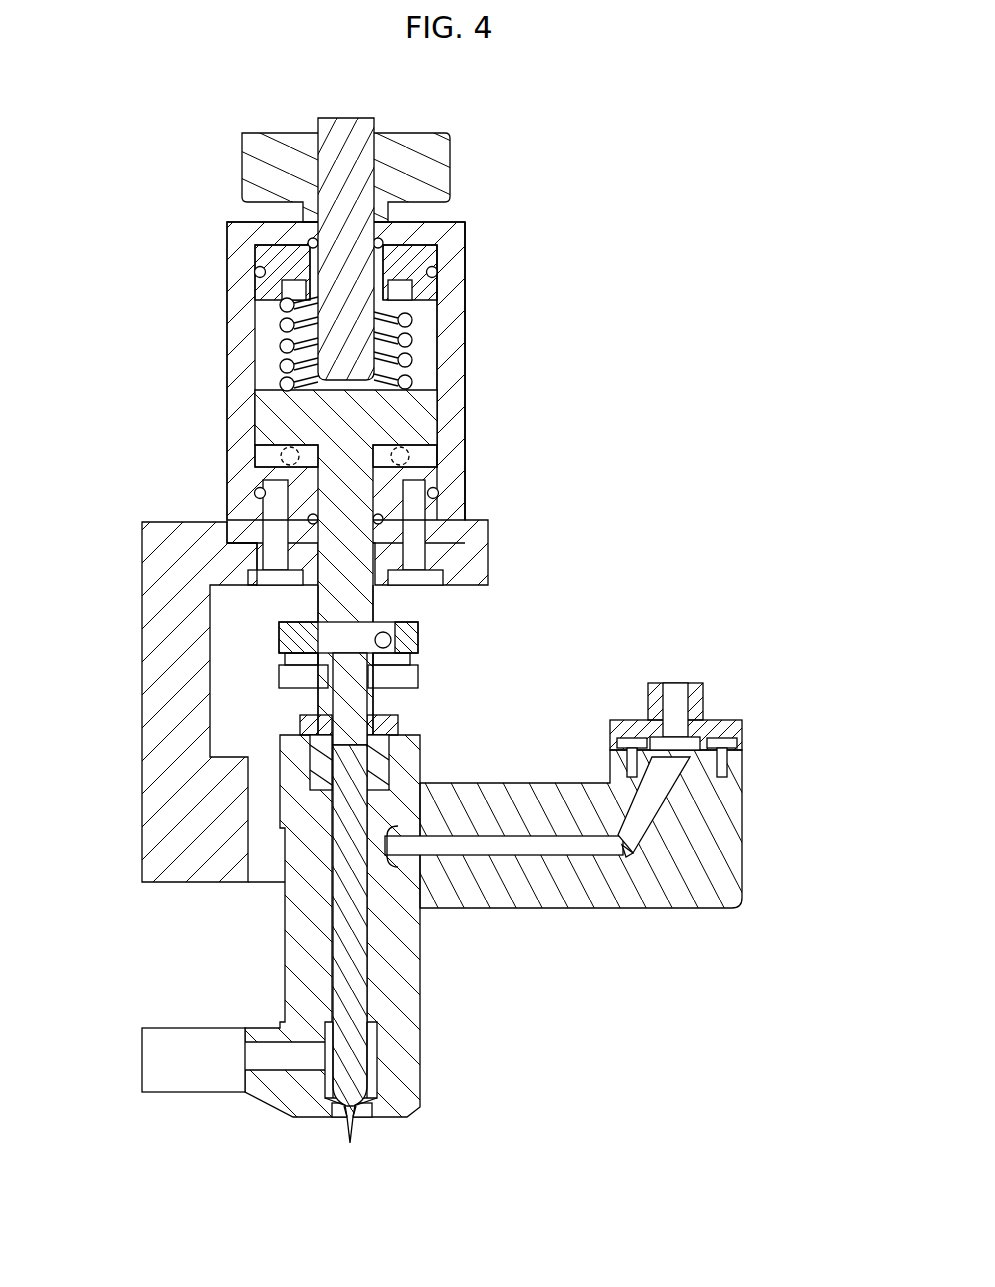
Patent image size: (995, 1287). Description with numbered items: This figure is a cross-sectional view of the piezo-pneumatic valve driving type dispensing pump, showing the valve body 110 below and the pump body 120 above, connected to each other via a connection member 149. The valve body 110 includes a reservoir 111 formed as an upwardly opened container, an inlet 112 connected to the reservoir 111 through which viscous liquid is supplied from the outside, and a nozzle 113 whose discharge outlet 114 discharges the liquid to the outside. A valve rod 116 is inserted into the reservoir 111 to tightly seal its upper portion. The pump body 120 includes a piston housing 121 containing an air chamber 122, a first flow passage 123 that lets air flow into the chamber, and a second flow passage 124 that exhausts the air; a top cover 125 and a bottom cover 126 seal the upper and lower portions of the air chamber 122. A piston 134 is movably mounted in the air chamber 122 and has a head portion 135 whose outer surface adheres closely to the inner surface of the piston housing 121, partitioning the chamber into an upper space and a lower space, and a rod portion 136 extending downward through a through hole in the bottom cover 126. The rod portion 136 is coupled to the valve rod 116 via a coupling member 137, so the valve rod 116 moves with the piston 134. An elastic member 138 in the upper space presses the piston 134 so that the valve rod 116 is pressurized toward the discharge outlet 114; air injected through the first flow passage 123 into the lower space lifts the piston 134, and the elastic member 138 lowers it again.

The valve body 110 is at (760, 832).
The reservoir 111 is at (365, 955).
The inlet 112 is at (673, 693).
The nozzle 113 is at (340, 1122).
The discharge outlet 114 is at (350, 1147).
The valve rod 116 is at (362, 697).
The pump body 120 is at (530, 352).
The piston housing 121 is at (460, 268).
The air chamber 122 is at (423, 340).
The first flow passage 123 is at (283, 453).
The second flow passage 124 is at (410, 455).
The top cover 125 is at (455, 222).
The bottom cover 126 is at (427, 477).
The piston 134 is at (445, 417).
The head portion 135 is at (270, 412).
The rod portion 136 is at (330, 600).
The coupling member 137 is at (420, 638).
The elastic member 138 is at (283, 343).
The connection member 149 is at (147, 770).